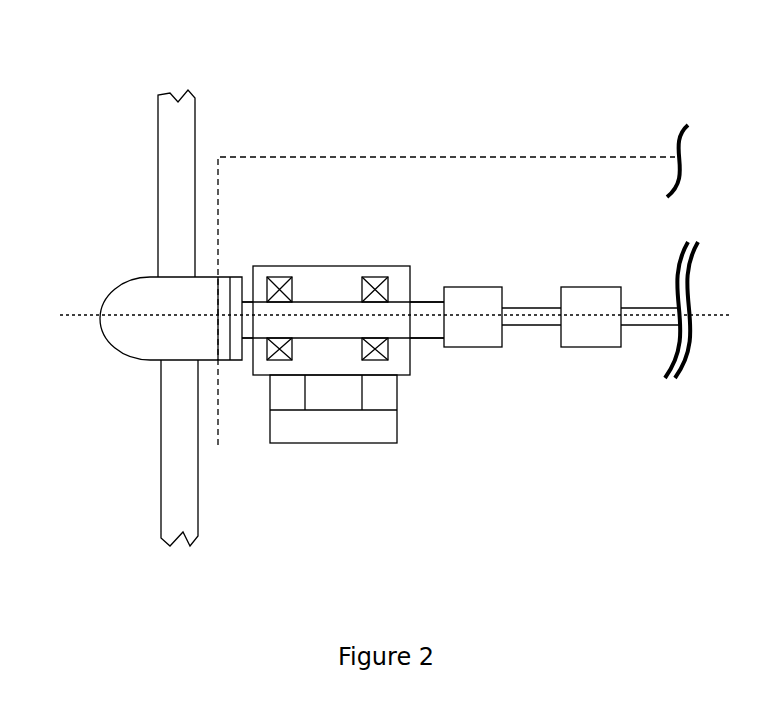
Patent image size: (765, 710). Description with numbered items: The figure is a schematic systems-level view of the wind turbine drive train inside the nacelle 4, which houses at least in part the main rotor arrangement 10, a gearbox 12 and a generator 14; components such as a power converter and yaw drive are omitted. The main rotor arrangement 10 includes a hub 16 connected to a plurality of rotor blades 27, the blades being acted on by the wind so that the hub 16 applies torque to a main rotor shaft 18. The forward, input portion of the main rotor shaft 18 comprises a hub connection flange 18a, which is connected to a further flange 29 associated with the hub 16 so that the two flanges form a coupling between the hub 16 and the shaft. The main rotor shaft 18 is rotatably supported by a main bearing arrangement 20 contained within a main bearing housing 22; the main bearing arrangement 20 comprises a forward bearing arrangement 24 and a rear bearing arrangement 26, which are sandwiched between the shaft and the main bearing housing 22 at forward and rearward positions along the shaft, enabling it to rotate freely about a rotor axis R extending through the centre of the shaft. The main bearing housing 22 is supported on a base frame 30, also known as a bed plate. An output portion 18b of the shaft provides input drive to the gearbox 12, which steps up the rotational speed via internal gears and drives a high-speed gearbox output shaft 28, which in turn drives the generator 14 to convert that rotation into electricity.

The main rotor arrangement 10 is at (98, 98).
The nacelle 4 is at (468, 156).
The rotor blades 27 is at (172, 211).
The hub 16 is at (152, 335).
The rotor axis R is at (86, 320).
The further flange 29 is at (222, 363).
The main rotor shaft 18 is at (334, 302).
The hub connection flange 18a is at (240, 277).
The output portion 18b is at (432, 300).
The main bearing housing 22 is at (305, 266).
The forward bearing arrangement 24 is at (281, 277).
The rear bearing arrangement 26 is at (387, 277).
The base frame 30 is at (347, 443).
The main bearing arrangement 20 is at (423, 382).
The gearbox 12 is at (462, 348).
The high-speed gearbox output shaft 28 is at (520, 305).
The generator 14 is at (590, 348).